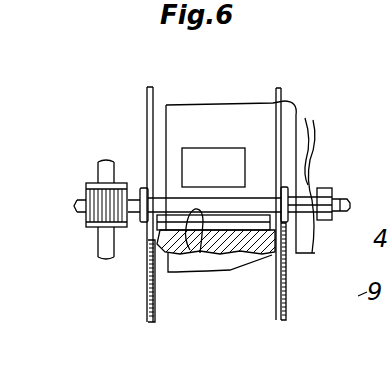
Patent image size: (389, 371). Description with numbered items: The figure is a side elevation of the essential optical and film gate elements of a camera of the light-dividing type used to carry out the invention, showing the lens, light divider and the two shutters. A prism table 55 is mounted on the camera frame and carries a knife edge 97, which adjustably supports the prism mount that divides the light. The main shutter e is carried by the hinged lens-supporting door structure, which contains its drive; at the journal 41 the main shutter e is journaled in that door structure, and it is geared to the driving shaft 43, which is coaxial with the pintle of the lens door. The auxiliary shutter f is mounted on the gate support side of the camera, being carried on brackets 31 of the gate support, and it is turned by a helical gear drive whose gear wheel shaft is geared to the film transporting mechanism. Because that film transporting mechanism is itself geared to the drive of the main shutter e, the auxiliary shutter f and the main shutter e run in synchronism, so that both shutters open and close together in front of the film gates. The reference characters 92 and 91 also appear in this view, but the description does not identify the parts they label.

The main shutter e is at (147, 104).
The auxiliary shutter f is at (284, 98).
The casing 92 is at (208, 110).
The pocket of casing 91 is at (287, 152).
The journal of the main shutter 41 is at (67, 206).
The driving shaft 43 is at (102, 237).
The brackets 31 is at (323, 193).
The prism table 55 is at (232, 248).
The knife edge 97 is at (190, 250).